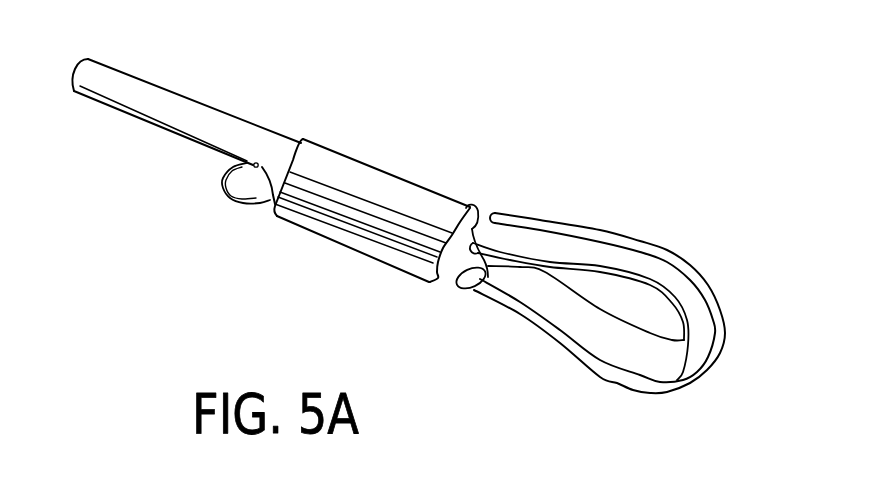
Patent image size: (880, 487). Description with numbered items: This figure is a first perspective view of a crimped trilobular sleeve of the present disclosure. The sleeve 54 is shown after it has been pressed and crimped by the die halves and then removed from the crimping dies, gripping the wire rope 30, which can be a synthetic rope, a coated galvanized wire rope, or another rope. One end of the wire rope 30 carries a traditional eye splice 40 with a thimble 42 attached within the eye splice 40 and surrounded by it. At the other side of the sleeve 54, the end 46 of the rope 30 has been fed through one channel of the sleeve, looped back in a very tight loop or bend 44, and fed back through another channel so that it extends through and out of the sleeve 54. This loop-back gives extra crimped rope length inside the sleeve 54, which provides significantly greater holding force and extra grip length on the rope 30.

The wire rope 30 is at (165, 103).
The loop or bend 44 is at (243, 185).
The sleeve 54 is at (395, 170).
The end of the rope 46 is at (470, 279).
The thimble 42 is at (657, 243).
The eye splice 40 is at (710, 350).